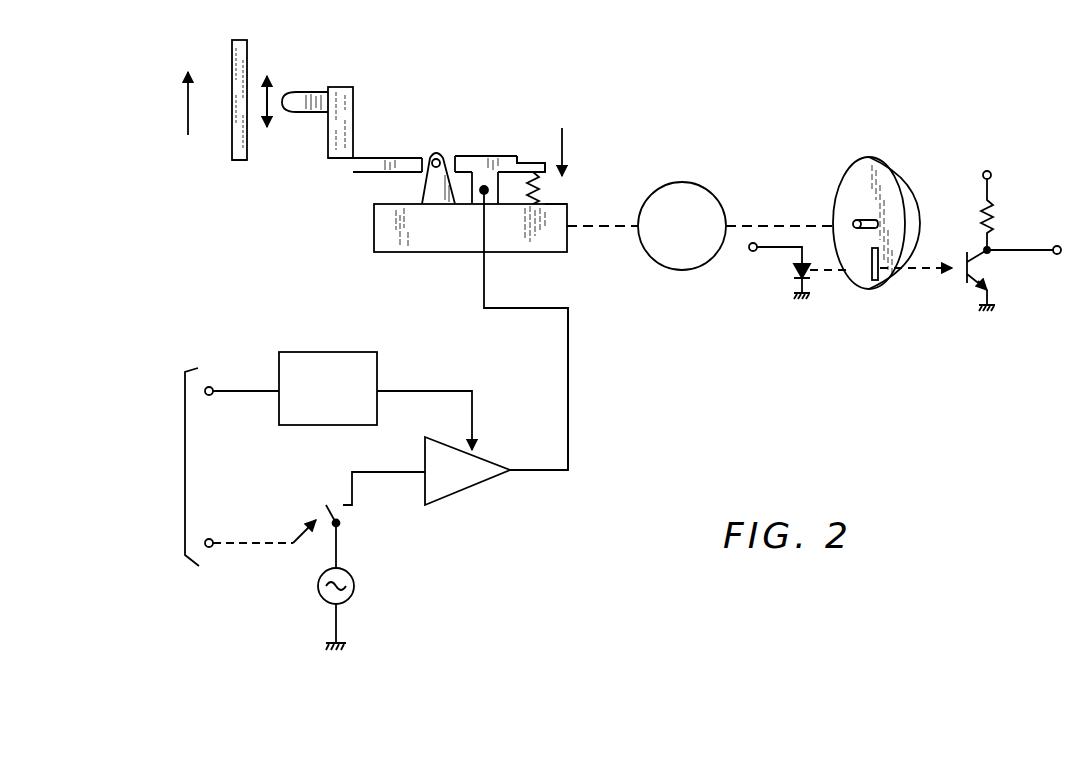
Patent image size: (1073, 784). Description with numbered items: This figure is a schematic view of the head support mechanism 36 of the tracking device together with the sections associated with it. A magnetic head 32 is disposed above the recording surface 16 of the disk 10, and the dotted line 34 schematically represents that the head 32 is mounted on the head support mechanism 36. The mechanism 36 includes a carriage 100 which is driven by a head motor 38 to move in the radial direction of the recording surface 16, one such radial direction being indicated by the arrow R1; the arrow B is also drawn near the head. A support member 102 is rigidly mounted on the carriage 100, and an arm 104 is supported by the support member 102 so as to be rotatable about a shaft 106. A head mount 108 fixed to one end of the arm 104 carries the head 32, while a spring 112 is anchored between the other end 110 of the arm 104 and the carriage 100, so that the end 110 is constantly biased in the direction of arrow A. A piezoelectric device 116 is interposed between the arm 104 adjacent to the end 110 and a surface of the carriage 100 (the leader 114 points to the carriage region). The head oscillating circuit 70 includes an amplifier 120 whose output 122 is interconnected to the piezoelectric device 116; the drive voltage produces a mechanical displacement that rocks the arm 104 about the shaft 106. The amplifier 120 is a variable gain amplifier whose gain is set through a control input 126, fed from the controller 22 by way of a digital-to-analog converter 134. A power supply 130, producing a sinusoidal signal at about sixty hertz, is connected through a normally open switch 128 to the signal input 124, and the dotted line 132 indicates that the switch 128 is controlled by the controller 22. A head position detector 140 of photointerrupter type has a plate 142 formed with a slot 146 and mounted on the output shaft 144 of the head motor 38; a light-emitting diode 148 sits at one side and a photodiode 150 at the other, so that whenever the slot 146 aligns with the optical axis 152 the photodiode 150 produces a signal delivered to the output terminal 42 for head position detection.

The disk 10 is at (232, 142).
The recording surface 16 is at (247, 58).
The arrow R1 is at (188, 122).
The arrow B is at (273, 92).
The magnetic head 32 is at (300, 113).
The head mount 108 is at (354, 102).
The arm 104 is at (386, 158).
The other end of the arm 110 is at (527, 163).
The shaft 106 is at (426, 174).
The support member 102 is at (438, 152).
The carriage 100 is at (374, 230).
The piezoelectric device 116 is at (472, 190).
The output of the amplifier 122 is at (570, 393).
The spring 112 is at (540, 184).
The base corner 114 is at (565, 204).
The dotted line 34 is at (492, 82).
The arrow A is at (562, 150).
The head motor 38 is at (645, 254).
The slotted plate 142 is at (852, 170).
The output shaft 144 is at (853, 222).
The slot 146 is at (873, 281).
The head position detector 140 is at (869, 138).
The light-emitting diode 148 is at (796, 270).
The optical axis 152 is at (925, 268).
The photodiode 150 is at (962, 282).
The output terminal 42 is at (1057, 254).
The head support mechanism 36 is at (704, 314).
The controller 22 is at (117, 467).
The digital-to-analog converter 134 is at (322, 352).
The control input 126 is at (427, 390).
The amplifier 120 is at (483, 483).
The signal input 124 is at (385, 473).
The switch 128 is at (332, 500).
The dotted line 132 is at (252, 540).
The power supply 130 is at (318, 588).
The head oscillating circuit 70 is at (452, 510).